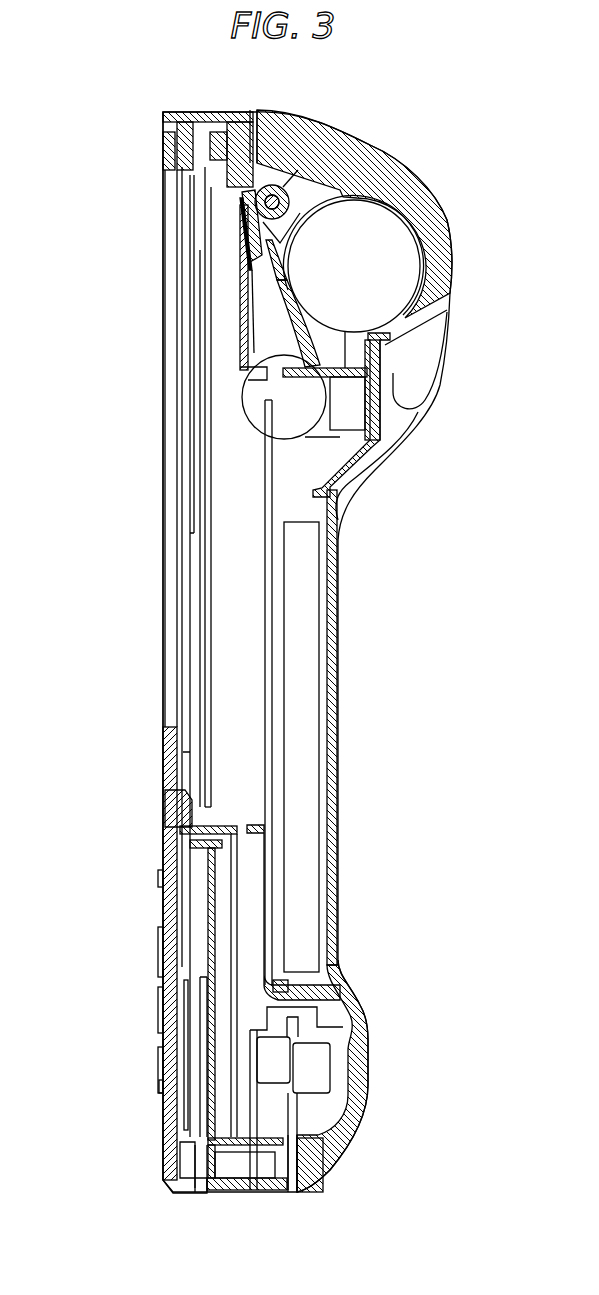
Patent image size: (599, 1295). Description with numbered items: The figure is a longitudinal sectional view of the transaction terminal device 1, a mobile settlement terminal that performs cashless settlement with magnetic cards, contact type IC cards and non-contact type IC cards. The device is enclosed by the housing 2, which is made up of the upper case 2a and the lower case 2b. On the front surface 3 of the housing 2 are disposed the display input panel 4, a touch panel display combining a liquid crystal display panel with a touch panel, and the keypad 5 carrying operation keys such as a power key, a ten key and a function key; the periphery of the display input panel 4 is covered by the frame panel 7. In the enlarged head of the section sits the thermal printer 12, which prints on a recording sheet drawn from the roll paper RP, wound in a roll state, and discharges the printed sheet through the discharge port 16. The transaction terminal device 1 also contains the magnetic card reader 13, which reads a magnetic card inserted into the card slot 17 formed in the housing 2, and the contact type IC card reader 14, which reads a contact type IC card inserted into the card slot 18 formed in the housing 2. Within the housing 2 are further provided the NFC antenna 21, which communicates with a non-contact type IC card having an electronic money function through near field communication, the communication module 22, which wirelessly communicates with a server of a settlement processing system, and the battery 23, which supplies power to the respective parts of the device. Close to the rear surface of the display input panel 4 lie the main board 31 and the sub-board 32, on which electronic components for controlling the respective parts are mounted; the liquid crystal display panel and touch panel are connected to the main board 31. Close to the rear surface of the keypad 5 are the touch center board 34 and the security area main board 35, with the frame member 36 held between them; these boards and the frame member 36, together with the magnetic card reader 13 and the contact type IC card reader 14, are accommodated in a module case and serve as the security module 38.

The transaction terminal device 1 is at (470, 131).
The housing 2 is at (64, 78).
The upper case 2a is at (163, 122).
The lower case 2b is at (223, 110).
The front surface 3 is at (183, 840).
The display input panel 4 is at (178, 388).
The keypad 5 is at (158, 1015).
The frame panel 7 is at (163, 238).
The thermal printer 12 is at (306, 202).
The magnetic card reader 13 is at (330, 1067).
The contact type IC card reader 14 is at (190, 1075).
The discharge port 16 is at (256, 111).
The card slot 17 is at (297, 1198).
The card slot 18 is at (199, 1198).
The NFC antenna 21 is at (197, 462).
The communication module 22 is at (213, 318).
The battery 23 is at (322, 675).
The main board 31 is at (208, 565).
The sub-board 32 is at (263, 662).
The touch center board 34 is at (180, 968).
The security area main board 35 is at (258, 923).
The frame member 36 is at (210, 913).
The security module 38 is at (330, 1148).
The roll paper RP is at (415, 258).